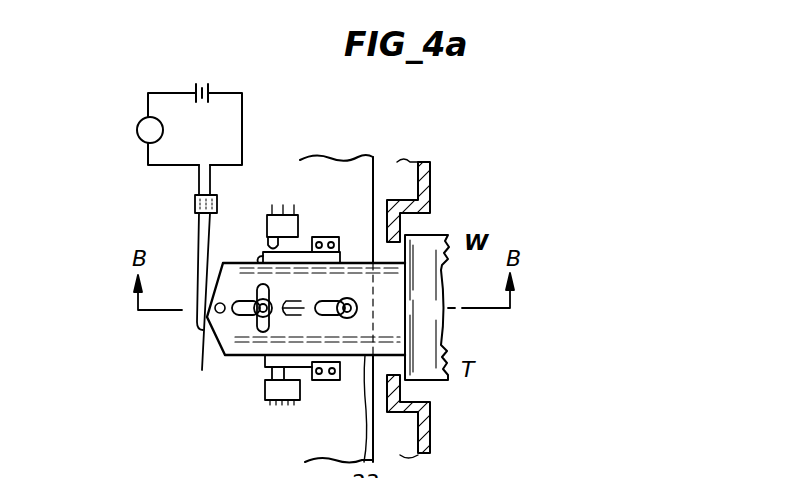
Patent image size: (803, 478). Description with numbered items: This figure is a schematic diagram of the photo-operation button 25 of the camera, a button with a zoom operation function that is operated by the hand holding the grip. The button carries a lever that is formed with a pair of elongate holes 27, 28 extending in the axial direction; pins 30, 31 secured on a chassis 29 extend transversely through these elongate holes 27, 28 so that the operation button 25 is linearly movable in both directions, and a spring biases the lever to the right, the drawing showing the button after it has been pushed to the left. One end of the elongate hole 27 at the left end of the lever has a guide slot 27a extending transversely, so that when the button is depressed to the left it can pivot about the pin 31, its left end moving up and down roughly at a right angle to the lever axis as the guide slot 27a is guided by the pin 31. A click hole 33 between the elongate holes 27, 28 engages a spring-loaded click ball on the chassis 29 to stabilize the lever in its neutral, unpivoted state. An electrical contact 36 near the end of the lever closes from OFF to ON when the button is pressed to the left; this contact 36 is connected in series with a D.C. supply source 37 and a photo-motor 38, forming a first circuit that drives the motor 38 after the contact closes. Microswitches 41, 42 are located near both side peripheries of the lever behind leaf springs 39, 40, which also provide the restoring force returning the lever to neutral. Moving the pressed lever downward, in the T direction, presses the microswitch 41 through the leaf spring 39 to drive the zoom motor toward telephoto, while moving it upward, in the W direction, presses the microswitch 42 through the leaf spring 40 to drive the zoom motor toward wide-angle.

The photo-operation button 25 is at (445, 381).
The elongate hole 27 is at (238, 312).
The guide slot 27a is at (258, 290).
The elongate hole 28 is at (333, 300).
The chassis 29 is at (362, 158).
The pin 30 is at (253, 311).
The pin 31 is at (357, 310).
The click hole 33 is at (283, 306).
The electrical contact 36 is at (190, 298).
The D.C. supply source 37 is at (210, 84).
The photo-motor 38 is at (140, 137).
The leaf spring 39 is at (297, 250).
The leaf spring 40 is at (302, 370).
The microswitch 41 is at (266, 222).
The microswitch 42 is at (262, 396).